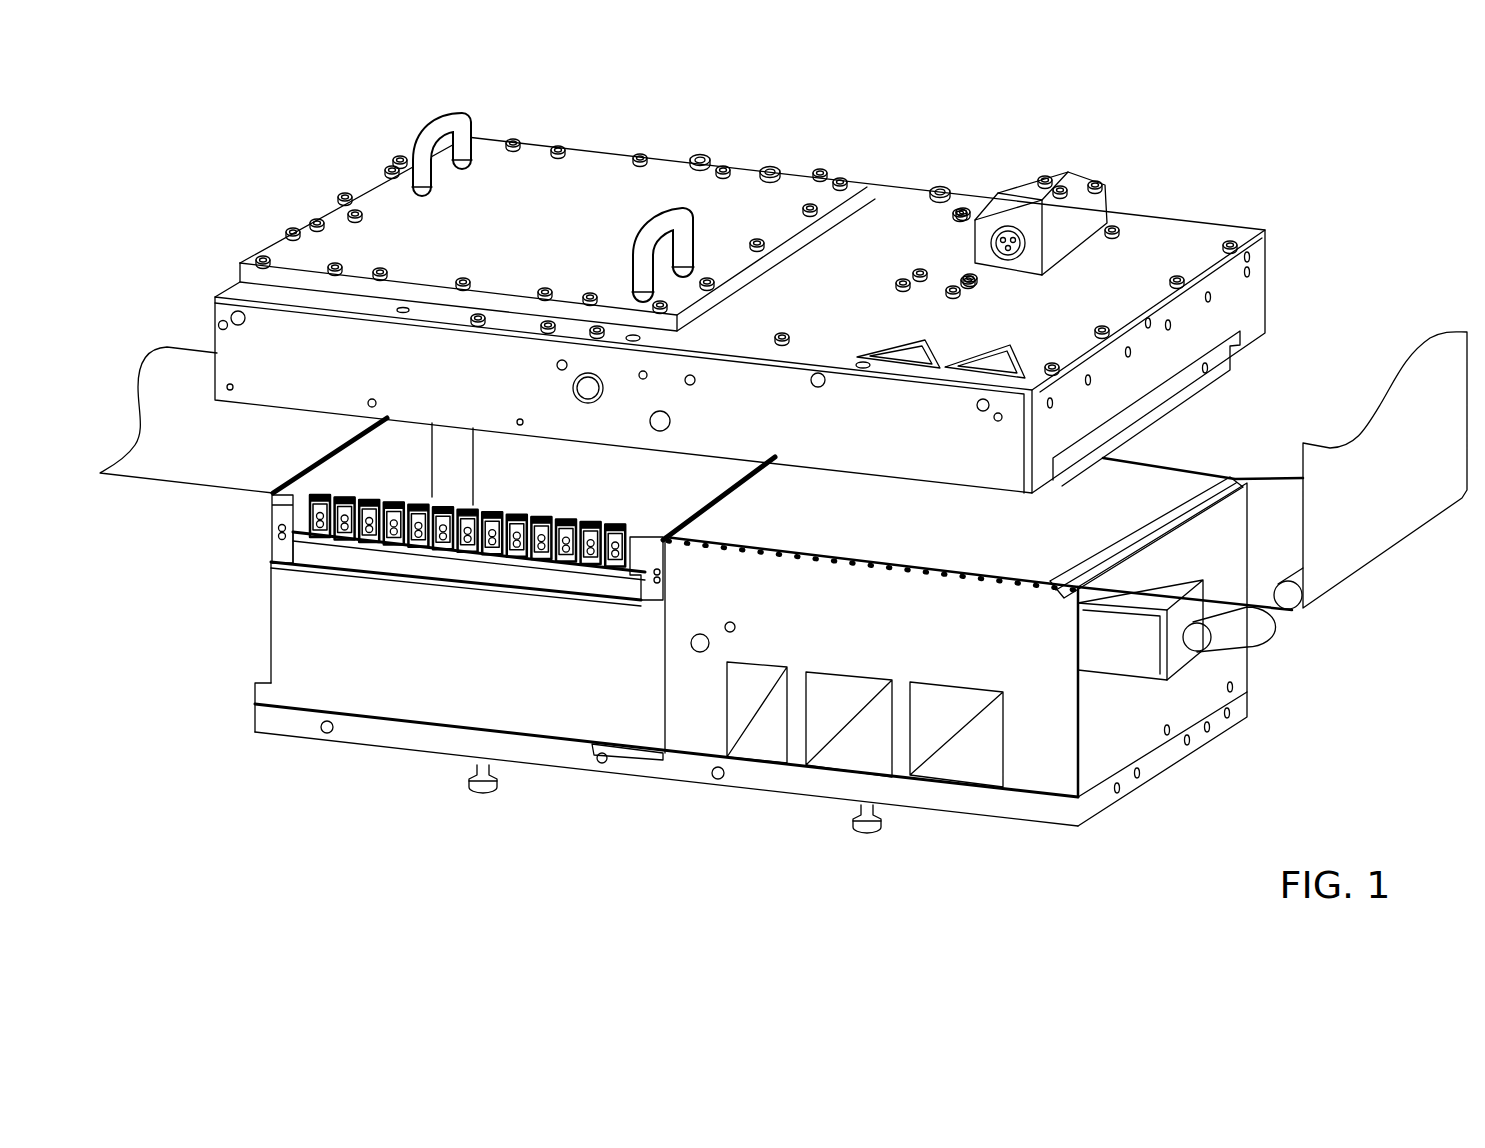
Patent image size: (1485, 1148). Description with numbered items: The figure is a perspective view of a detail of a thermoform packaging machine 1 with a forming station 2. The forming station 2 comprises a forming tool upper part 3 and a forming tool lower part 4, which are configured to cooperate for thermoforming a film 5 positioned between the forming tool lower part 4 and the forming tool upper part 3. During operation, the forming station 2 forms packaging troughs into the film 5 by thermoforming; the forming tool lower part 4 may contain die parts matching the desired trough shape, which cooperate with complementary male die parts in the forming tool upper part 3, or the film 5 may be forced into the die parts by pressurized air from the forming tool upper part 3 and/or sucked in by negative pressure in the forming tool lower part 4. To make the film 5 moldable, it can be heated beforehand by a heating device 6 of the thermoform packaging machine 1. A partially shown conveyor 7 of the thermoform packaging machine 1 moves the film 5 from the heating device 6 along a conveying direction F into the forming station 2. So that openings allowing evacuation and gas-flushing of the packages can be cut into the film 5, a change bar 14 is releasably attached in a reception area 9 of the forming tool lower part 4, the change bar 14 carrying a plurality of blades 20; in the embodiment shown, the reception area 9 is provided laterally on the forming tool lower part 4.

The thermoform packaging machine 1 is at (1190, 162).
The forming station 2 is at (728, 663).
The forming tool upper part 3 is at (275, 176).
The forming tool lower part 4 is at (317, 672).
The film 5 is at (1280, 495).
The heating device 6 is at (1018, 595).
The conveyor 7 is at (1296, 622).
The reception area 9 is at (262, 520).
The change bar 14 is at (450, 596).
The blades 20 is at (375, 497).
The conveying direction F is at (565, 818).